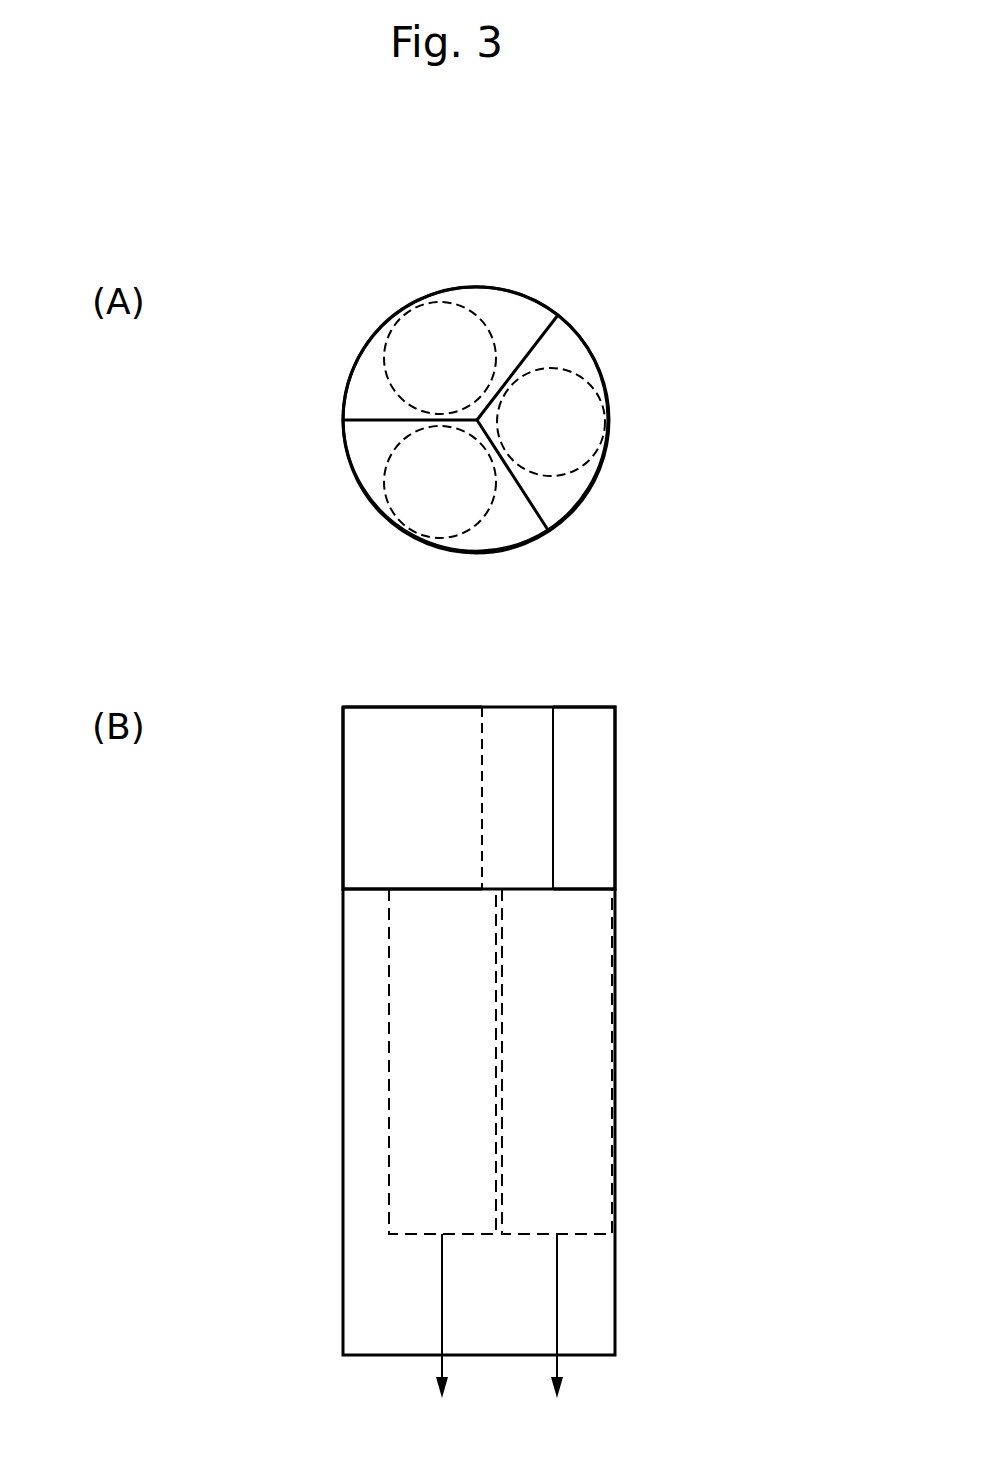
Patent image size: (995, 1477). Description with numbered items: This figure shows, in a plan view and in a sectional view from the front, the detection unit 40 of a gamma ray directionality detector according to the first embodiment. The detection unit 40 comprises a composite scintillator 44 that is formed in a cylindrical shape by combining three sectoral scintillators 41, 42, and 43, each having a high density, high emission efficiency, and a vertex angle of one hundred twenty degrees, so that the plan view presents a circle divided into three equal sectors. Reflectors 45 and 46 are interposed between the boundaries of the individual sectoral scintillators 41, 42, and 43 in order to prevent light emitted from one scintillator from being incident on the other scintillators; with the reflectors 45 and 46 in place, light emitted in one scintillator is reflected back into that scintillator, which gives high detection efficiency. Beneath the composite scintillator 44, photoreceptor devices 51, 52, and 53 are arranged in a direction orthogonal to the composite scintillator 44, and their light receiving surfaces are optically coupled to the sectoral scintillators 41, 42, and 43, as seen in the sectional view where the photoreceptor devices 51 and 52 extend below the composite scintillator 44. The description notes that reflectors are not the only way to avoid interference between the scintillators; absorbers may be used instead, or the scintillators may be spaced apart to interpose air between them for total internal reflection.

The detection unit 40 is at (651, 901).
The sectoral scintillator 41 is at (365, 455).
The sectoral scintillator 42 is at (570, 493).
The sectoral scintillator 43 is at (366, 386).
The composite scintillator 44 is at (515, 282).
The reflector 45 is at (558, 315).
The reflector 46 is at (342, 420).
The photoreceptor device 51 is at (407, 497).
The photoreceptor device 52 is at (578, 395).
The photoreceptor device 53 is at (425, 332).